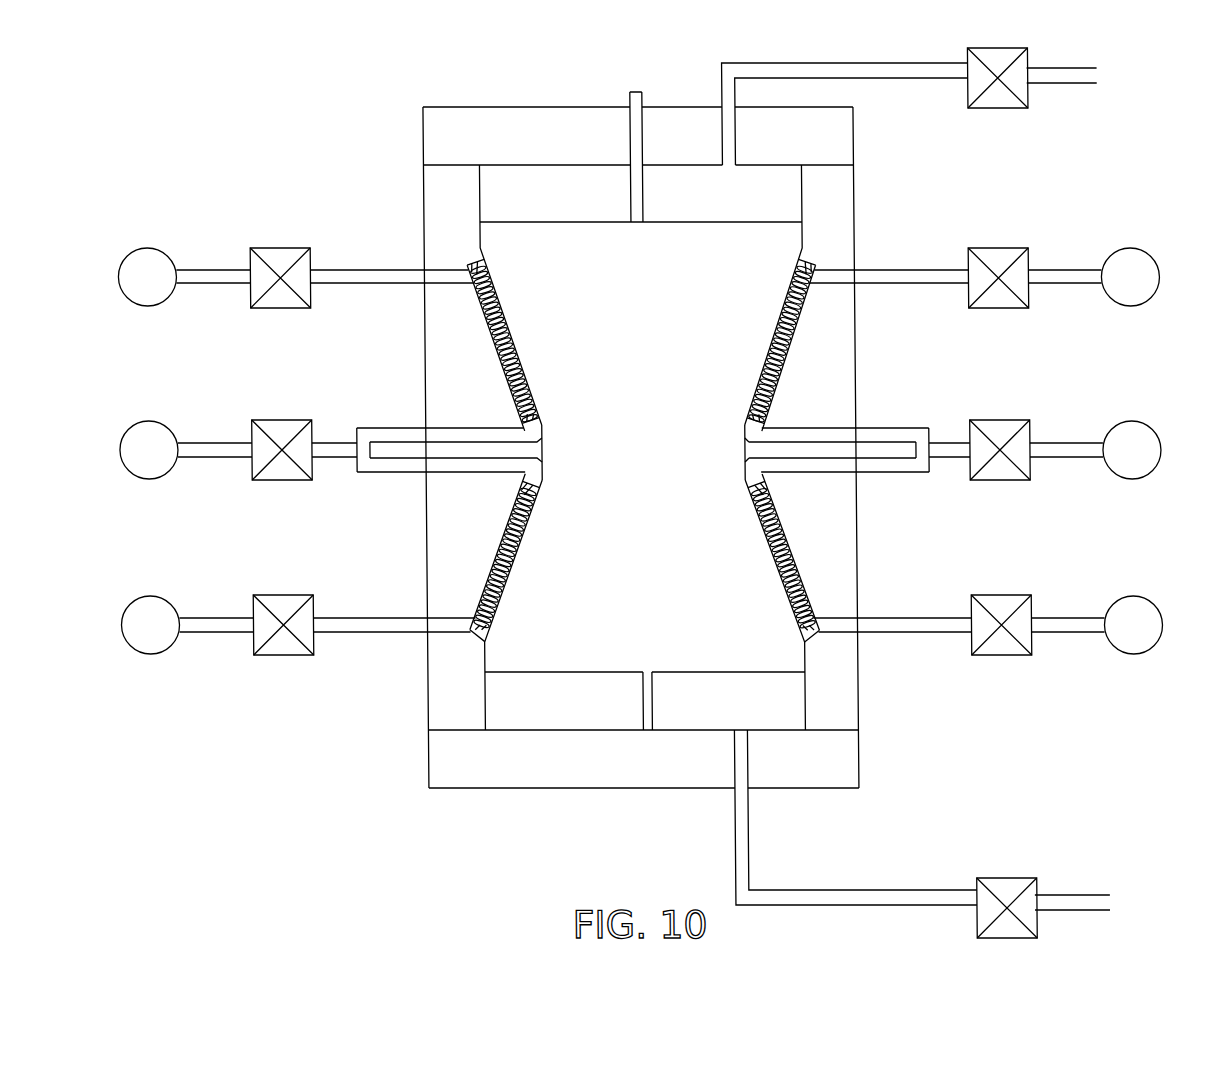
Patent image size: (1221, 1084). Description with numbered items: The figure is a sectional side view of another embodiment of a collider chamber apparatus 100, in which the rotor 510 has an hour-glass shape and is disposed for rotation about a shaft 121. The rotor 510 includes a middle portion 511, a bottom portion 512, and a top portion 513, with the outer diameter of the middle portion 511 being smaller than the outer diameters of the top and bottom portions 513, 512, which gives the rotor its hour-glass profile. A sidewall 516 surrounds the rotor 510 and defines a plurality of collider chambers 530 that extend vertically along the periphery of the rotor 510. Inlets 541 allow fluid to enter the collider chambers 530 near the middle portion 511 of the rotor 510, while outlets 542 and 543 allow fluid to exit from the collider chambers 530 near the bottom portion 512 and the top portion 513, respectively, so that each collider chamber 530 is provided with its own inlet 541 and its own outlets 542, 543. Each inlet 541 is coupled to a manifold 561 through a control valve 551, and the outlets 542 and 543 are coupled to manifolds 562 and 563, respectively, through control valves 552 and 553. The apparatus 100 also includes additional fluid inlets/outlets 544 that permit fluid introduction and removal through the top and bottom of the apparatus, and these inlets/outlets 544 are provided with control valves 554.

The collider chamber apparatus 100 is at (352, 794).
The shaft 121 is at (648, 705).
The rotor 510 is at (501, 222).
The middle portion 511 is at (541, 448).
The bottom portion 512 is at (483, 657).
The top portion 513 is at (479, 244).
The sidewall 516 is at (422, 679).
The collider chambers 530 is at (797, 326).
The inlets 541 is at (332, 440).
The outlets 542 is at (378, 616).
The outlets 543 is at (378, 268).
The additional fluid inlets/outlets 544 is at (890, 80).
The control valve 551 is at (276, 420).
The control valves 552 is at (279, 594).
The control valves 553 is at (278, 247).
The control valves 554 is at (999, 108).
The manifold 561 is at (146, 420).
The manifold 562 is at (146, 594).
The manifold 563 is at (147, 246).